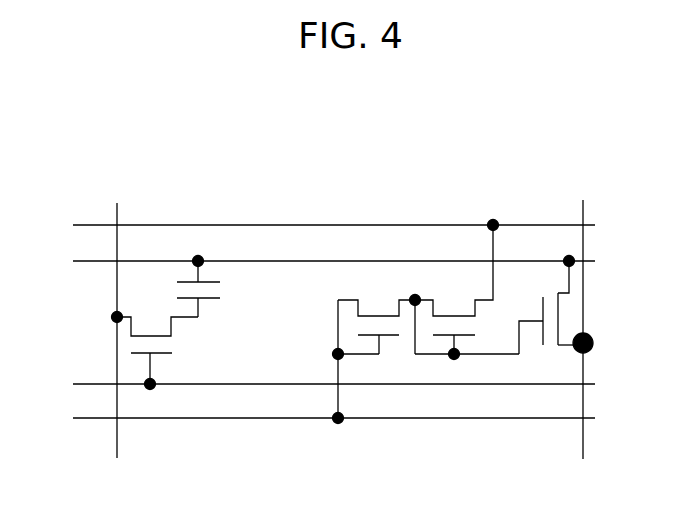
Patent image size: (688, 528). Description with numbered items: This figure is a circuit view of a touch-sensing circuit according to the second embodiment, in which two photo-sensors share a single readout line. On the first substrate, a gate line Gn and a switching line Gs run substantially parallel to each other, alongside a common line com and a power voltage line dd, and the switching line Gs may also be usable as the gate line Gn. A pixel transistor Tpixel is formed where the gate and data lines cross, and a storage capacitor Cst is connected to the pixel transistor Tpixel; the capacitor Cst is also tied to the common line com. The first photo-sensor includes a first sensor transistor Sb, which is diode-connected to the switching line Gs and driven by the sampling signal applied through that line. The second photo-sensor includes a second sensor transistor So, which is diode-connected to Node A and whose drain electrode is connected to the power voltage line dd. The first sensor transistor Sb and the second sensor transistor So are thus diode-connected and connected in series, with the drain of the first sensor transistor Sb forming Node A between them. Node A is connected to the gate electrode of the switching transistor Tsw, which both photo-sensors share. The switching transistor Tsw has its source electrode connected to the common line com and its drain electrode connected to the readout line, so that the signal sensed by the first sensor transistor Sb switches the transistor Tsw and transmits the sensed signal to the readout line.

The power voltage line dd is at (314, 224).
The common line com is at (314, 260).
The gate line Gn is at (316, 385).
The switching line Gs is at (316, 419).
The storage capacitor Cst is at (216, 287).
The pixel transistor Tpixel is at (168, 351).
The first sensor transistor Sb is at (374, 349).
The Node A is at (462, 314).
The second sensor transistor So is at (457, 290).
The switching transistor Tsw is at (550, 305).